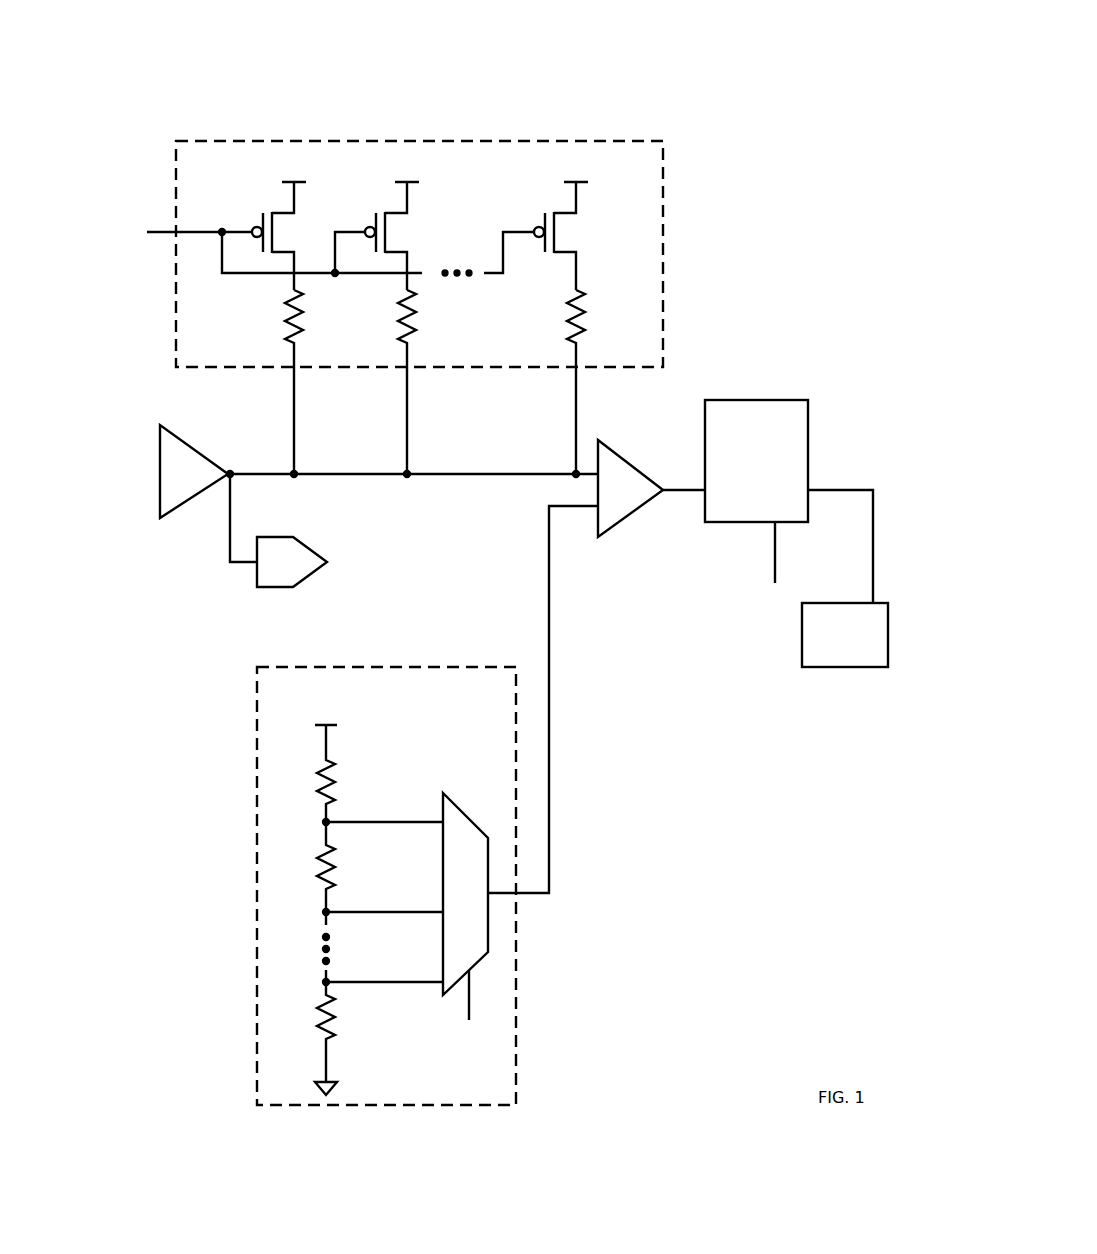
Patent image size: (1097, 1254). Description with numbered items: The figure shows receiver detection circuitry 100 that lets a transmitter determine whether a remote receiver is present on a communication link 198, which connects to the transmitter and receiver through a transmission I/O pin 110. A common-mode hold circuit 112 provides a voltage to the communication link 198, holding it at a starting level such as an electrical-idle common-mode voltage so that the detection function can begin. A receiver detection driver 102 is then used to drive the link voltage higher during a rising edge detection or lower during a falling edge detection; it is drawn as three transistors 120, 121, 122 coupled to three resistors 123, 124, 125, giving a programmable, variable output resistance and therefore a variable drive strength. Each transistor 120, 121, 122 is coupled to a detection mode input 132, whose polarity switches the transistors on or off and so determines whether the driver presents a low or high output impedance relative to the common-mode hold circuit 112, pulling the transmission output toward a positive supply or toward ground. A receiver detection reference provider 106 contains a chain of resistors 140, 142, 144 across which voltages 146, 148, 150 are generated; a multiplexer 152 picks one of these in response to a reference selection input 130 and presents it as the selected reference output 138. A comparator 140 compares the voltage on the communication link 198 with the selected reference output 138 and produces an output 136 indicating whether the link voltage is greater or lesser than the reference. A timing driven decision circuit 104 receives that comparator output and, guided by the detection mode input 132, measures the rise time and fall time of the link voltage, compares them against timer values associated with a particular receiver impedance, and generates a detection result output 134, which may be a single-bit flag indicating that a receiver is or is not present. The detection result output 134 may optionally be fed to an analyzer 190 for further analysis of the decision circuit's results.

The receiver detection circuitry 100 is at (783, 80).
The receiver detection driver 102 is at (289, 137).
The timing driven decision circuit 104 is at (802, 511).
The receiver detection reference provider 106 is at (520, 1073).
The transmission I/O pin 110 is at (263, 535).
The common-mode hold circuit 112 is at (194, 501).
The transistor 120 is at (260, 195).
The transistor 121 is at (374, 195).
The transistor 122 is at (544, 195).
The resistor 123 is at (280, 320).
The resistor 124 is at (392, 320).
The resistor 125 is at (558, 320).
The reference selection input 130 is at (474, 1003).
The detection mode input 132 is at (748, 617).
The detection result output 134 is at (859, 486).
The output 136 is at (673, 495).
The selected reference output 138 is at (553, 750).
The comparator 140 is at (275, 758).
The resistor 142 is at (312, 868).
The resistor 144 is at (312, 1015).
The voltage 146 is at (405, 803).
The voltage 148 is at (405, 893).
The voltage 150 is at (405, 963).
The multiplexer 152 is at (499, 788).
The analyzer 190 is at (830, 657).
The communication link 198 is at (245, 468).